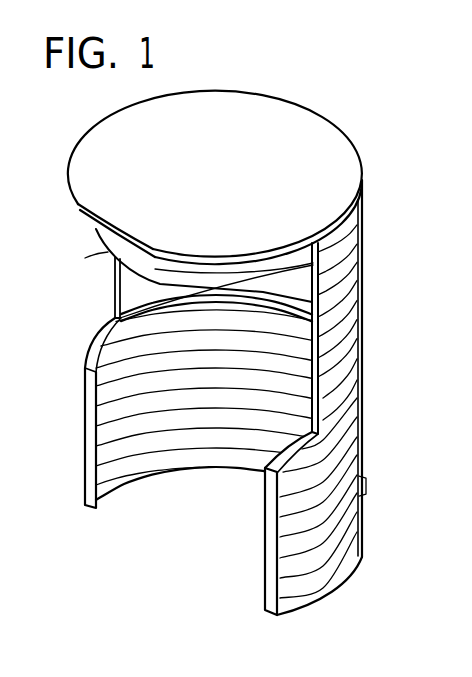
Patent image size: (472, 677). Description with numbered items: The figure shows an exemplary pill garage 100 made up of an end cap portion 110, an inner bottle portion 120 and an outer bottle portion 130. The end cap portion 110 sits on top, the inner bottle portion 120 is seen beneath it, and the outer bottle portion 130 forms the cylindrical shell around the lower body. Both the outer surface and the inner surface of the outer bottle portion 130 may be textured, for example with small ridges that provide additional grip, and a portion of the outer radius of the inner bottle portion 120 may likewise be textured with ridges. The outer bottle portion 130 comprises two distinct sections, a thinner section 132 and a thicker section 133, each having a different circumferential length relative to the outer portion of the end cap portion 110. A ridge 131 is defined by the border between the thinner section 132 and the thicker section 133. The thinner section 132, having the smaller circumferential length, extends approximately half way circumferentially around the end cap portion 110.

The pill garage 100 is at (320, 103).
The end cap portion 110 is at (77, 205).
The inner bottle portion 120 is at (113, 253).
The outer bottle portion 130 is at (347, 573).
The ridge 131 is at (110, 332).
The thinner section 132 is at (114, 297).
The thicker section 133 is at (92, 468).